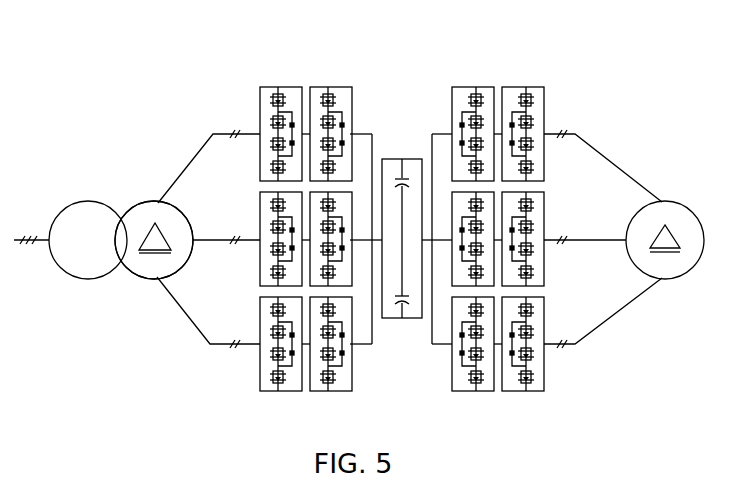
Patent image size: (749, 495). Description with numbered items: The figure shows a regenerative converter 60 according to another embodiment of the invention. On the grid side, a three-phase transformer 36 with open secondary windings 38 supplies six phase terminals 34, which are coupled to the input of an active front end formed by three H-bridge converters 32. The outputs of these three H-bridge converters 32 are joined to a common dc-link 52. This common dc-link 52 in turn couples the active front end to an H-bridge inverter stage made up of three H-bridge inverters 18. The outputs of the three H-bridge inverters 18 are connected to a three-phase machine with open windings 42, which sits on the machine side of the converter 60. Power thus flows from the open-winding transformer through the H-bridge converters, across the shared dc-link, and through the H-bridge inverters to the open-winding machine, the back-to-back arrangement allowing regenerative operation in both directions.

The regenerative converter 60 is at (369, 37).
The three-phase transformer 36 is at (120, 203).
The open secondary windings 38 is at (193, 268).
The phase terminals 34 is at (221, 128).
The H-bridge converters 32 is at (297, 77).
The common dc-link 52 is at (402, 152).
The H-bridge inverters 18 is at (524, 78).
The three-phase machine with open windings 42 is at (690, 201).